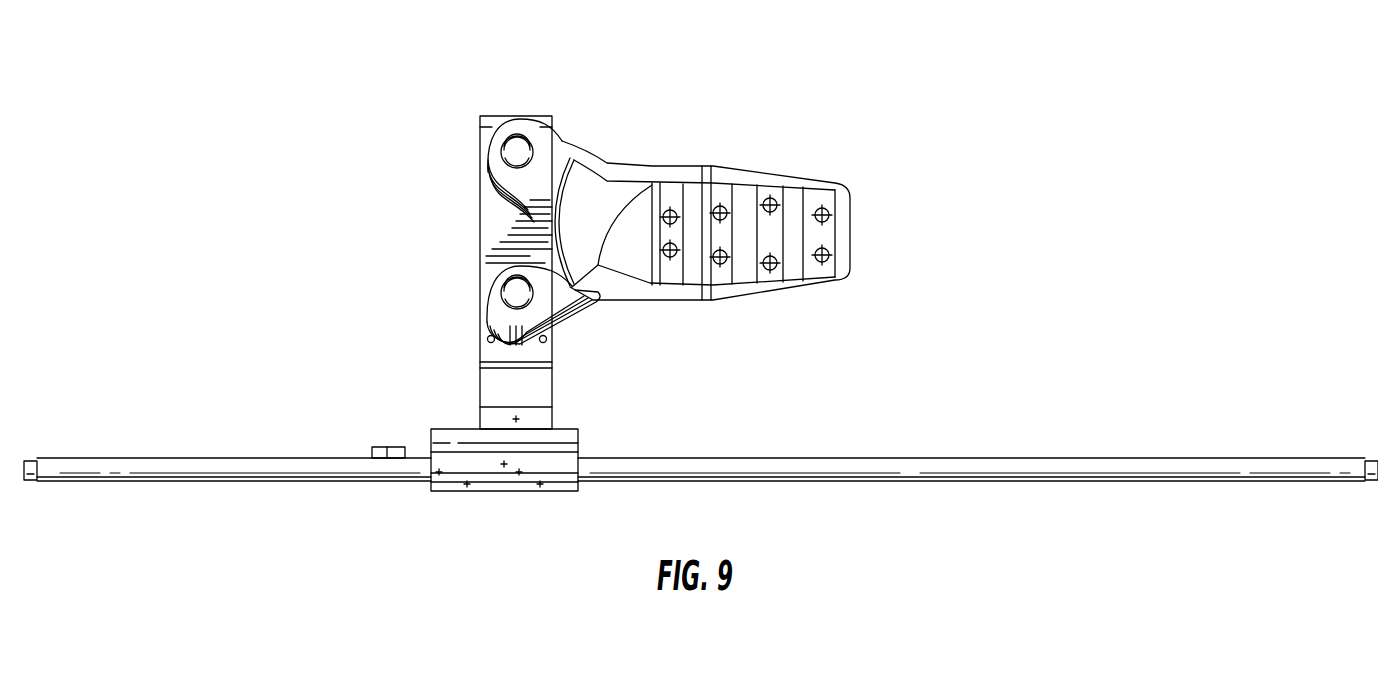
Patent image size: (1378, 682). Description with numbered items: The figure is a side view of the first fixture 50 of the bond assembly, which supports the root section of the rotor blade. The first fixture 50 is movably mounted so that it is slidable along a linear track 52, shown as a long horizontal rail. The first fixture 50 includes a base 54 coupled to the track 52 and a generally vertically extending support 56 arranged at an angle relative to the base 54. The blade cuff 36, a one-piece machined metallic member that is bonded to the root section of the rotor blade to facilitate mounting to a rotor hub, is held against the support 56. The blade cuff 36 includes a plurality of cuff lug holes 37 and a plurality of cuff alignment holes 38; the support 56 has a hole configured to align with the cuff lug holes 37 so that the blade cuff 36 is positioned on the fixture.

The first fixture 50 is at (475, 84).
The blade cuff 36 is at (572, 207).
The cuff lug holes 37 is at (505, 148).
The cuff alignment holes 38 is at (770, 212).
The linear track 52 is at (933, 472).
The base 54 is at (557, 447).
The support 56 is at (482, 254).